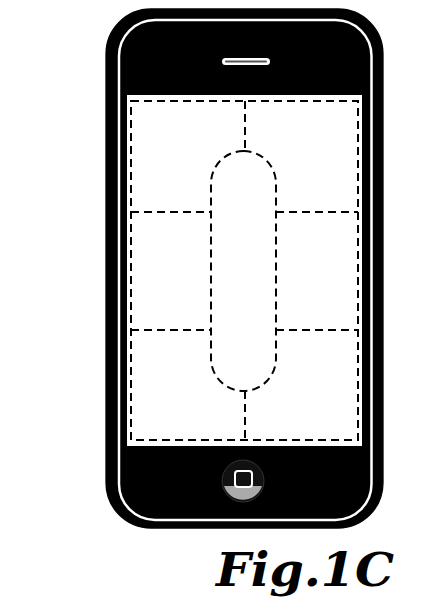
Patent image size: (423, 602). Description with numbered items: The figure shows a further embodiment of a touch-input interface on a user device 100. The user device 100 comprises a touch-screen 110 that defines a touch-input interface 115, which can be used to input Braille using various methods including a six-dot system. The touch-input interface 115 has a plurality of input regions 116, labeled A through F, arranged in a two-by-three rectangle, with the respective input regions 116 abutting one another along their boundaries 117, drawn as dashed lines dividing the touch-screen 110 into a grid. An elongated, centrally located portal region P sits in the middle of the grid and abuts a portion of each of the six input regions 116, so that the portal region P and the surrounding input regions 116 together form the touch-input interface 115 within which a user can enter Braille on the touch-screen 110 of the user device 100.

The user device 100 is at (97, 157).
The touch-screen 110 is at (322, 150).
The input regions 116 is at (330, 295).
The touch-input interface 115 is at (322, 350).
The boundaries 117 is at (150, 321).